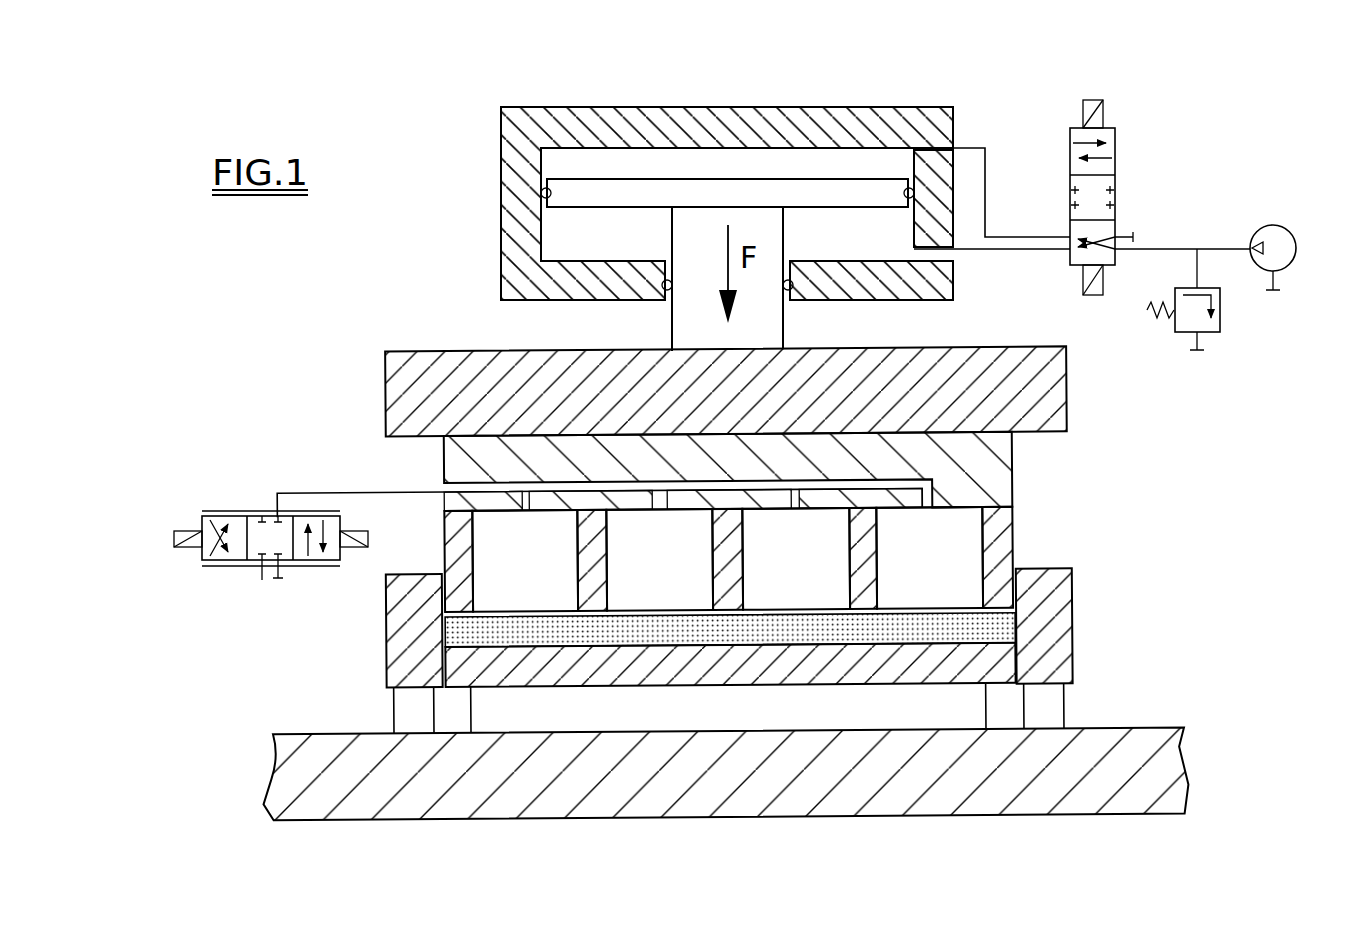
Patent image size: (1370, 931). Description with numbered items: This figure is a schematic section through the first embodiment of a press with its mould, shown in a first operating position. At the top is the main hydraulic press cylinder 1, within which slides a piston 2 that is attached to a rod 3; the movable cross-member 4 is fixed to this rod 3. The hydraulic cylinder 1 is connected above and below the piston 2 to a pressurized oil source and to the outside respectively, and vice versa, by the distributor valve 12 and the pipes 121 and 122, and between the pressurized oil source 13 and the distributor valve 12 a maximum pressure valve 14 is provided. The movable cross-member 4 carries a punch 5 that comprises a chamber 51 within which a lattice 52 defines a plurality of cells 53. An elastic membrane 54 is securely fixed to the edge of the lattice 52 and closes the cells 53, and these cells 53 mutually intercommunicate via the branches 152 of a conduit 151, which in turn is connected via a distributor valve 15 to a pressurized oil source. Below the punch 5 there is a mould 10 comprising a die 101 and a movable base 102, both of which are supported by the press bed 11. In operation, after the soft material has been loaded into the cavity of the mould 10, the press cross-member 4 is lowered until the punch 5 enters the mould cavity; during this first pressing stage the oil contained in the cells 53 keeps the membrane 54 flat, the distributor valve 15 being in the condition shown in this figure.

The main hydraulic press cylinder 1 is at (516, 152).
The piston 2 is at (575, 198).
The rod 3 is at (680, 320).
The movable cross-member 4 is at (392, 386).
The punch 5 is at (715, 646).
The mould 10 is at (733, 707).
The press bed 11 is at (1131, 800).
The distributor valve 12 is at (1115, 150).
The pressurized oil source 13 is at (1283, 228).
The maximum pressure valve 14 is at (1180, 335).
The distributor valve 15 is at (222, 513).
The chamber 51 is at (548, 512).
The lattice 52 is at (458, 540).
The cells 53 is at (531, 597).
The elastic membrane 54 is at (640, 617).
The die 101 is at (396, 640).
The movable base 102 is at (800, 682).
The pipe 121 is at (980, 147).
The pipe 122 is at (1022, 252).
The conduit 151 is at (460, 489).
The branches 152 is at (656, 508).